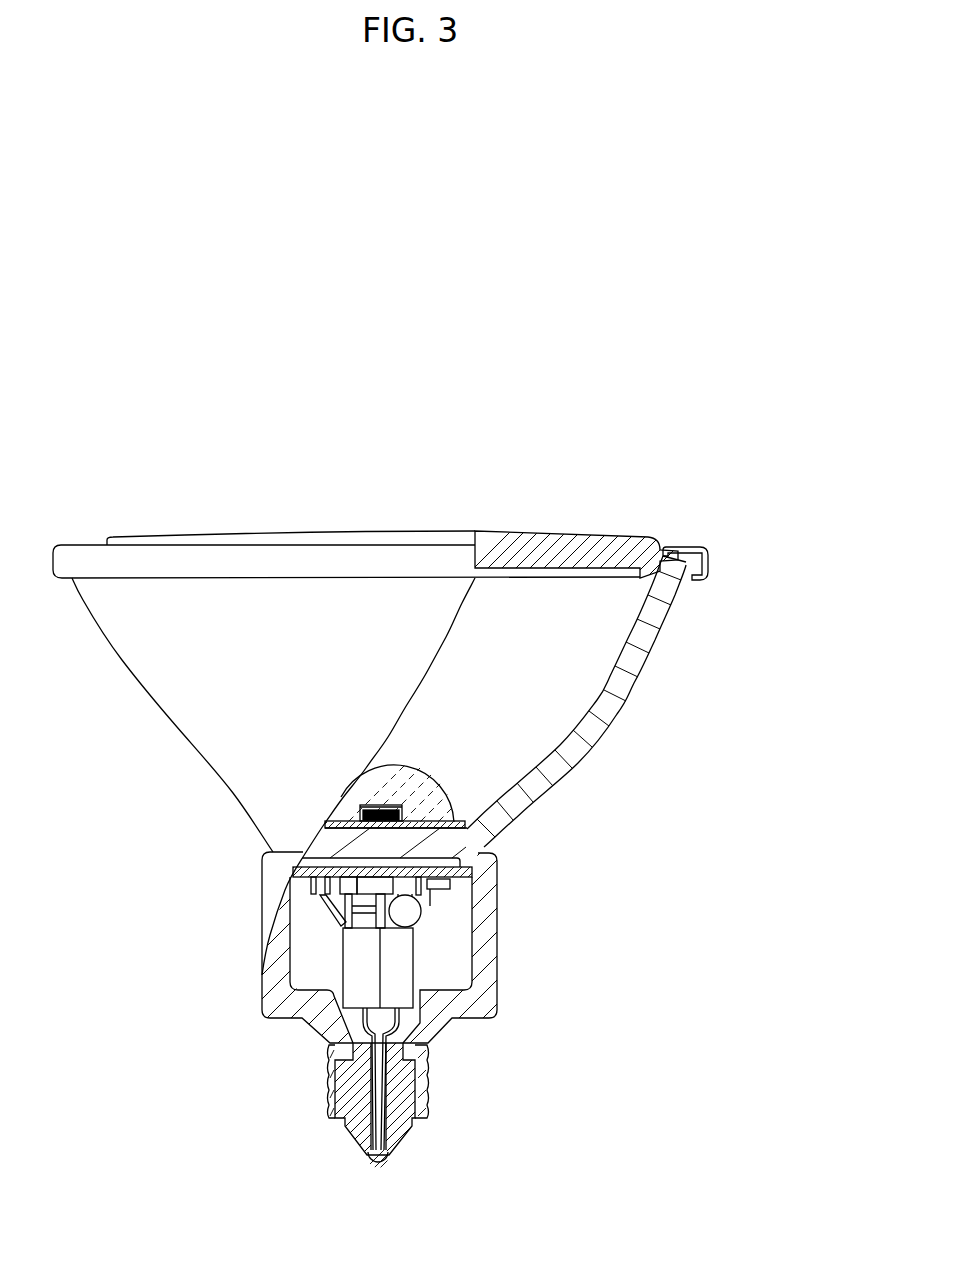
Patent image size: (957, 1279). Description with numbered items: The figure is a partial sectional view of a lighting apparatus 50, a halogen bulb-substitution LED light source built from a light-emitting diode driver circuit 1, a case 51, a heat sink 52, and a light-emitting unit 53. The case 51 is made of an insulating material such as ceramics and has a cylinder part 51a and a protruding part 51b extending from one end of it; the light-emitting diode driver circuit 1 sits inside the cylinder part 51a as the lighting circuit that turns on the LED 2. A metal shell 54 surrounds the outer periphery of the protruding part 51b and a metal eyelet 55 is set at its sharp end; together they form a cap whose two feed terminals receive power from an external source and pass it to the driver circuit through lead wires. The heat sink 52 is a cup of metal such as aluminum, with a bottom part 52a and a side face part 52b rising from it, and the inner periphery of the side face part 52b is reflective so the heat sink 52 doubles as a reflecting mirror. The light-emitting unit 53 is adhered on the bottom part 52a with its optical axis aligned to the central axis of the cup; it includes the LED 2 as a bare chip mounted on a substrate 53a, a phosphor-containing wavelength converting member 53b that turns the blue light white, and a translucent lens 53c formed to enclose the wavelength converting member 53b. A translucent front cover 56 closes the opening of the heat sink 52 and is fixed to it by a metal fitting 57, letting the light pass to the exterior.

The lighting apparatus 50 is at (781, 488).
The front cover 56 is at (600, 540).
The metal fitting 57 is at (707, 548).
The heat sink 52 is at (735, 728).
The bottom part 52a is at (462, 843).
The side face part 52b is at (599, 728).
The light-emitting unit 53 is at (390, 694).
The substrate 53a is at (325, 822).
The LED 2 is at (360, 808).
The wavelength converting member 53b is at (368, 798).
The lens 53c is at (377, 773).
The light-emitting diode driver circuit 1 is at (313, 908).
The case 51 is at (607, 921).
The cylinder part 51a is at (482, 934).
The protruding part 51b is at (397, 1075).
The shell 54 is at (430, 1100).
The eyelet 55 is at (393, 1158).